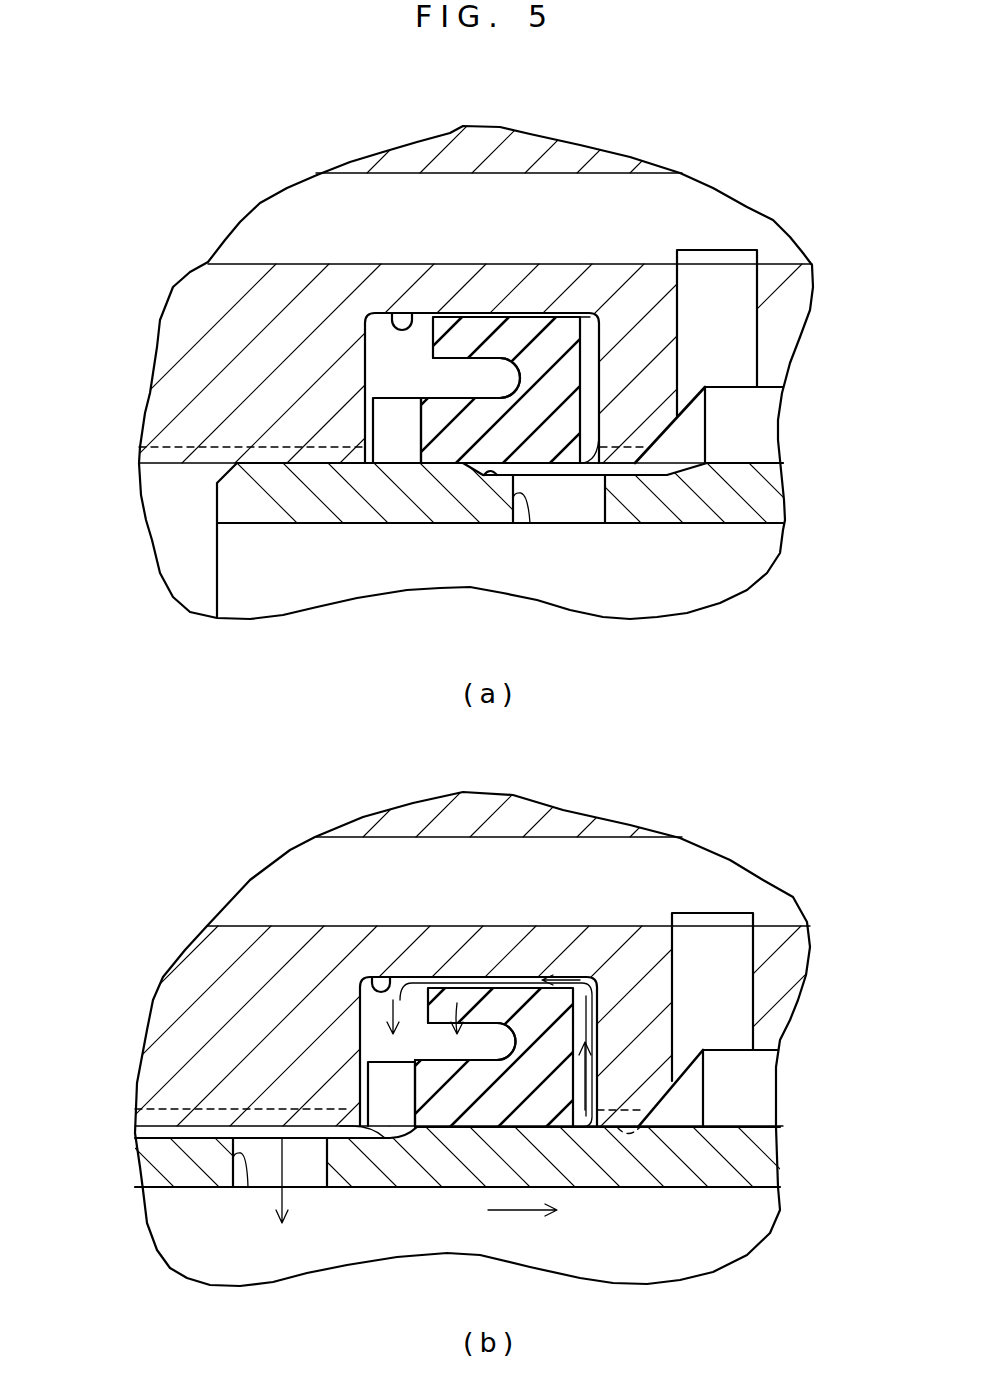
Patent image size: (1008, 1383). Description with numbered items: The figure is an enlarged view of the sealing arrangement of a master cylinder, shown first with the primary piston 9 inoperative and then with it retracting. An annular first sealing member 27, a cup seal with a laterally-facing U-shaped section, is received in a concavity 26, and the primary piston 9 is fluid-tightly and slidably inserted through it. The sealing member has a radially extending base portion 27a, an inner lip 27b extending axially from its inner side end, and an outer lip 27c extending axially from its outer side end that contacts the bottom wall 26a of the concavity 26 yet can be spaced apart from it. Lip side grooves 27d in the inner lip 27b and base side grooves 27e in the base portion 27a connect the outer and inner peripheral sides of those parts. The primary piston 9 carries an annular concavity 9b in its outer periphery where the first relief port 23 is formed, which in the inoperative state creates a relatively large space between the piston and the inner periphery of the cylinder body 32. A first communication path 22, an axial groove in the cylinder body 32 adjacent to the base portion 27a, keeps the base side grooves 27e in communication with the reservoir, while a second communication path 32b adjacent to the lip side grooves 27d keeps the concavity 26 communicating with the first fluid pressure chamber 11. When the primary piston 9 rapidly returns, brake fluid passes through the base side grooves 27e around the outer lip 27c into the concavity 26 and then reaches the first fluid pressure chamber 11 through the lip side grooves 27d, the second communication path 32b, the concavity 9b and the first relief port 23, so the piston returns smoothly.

The primary piston 9 is at (712, 497).
The annular concavity 9b is at (488, 473).
The first fluid pressure chamber 11 is at (185, 522).
The first communication path 22 is at (637, 468).
The first relief port 23 is at (530, 523).
The concavity 26 is at (393, 363).
The bottom wall 26a is at (393, 328).
The first sealing member 27 is at (555, 340).
The base portion 27a is at (552, 395).
The inner lip 27b is at (453, 437).
The outer lip 27c is at (470, 328).
The lip side grooves 27d is at (417, 433).
The base side grooves 27e is at (592, 322).
The cylinder body 32 is at (203, 308).
The second communication path 32b is at (217, 460).